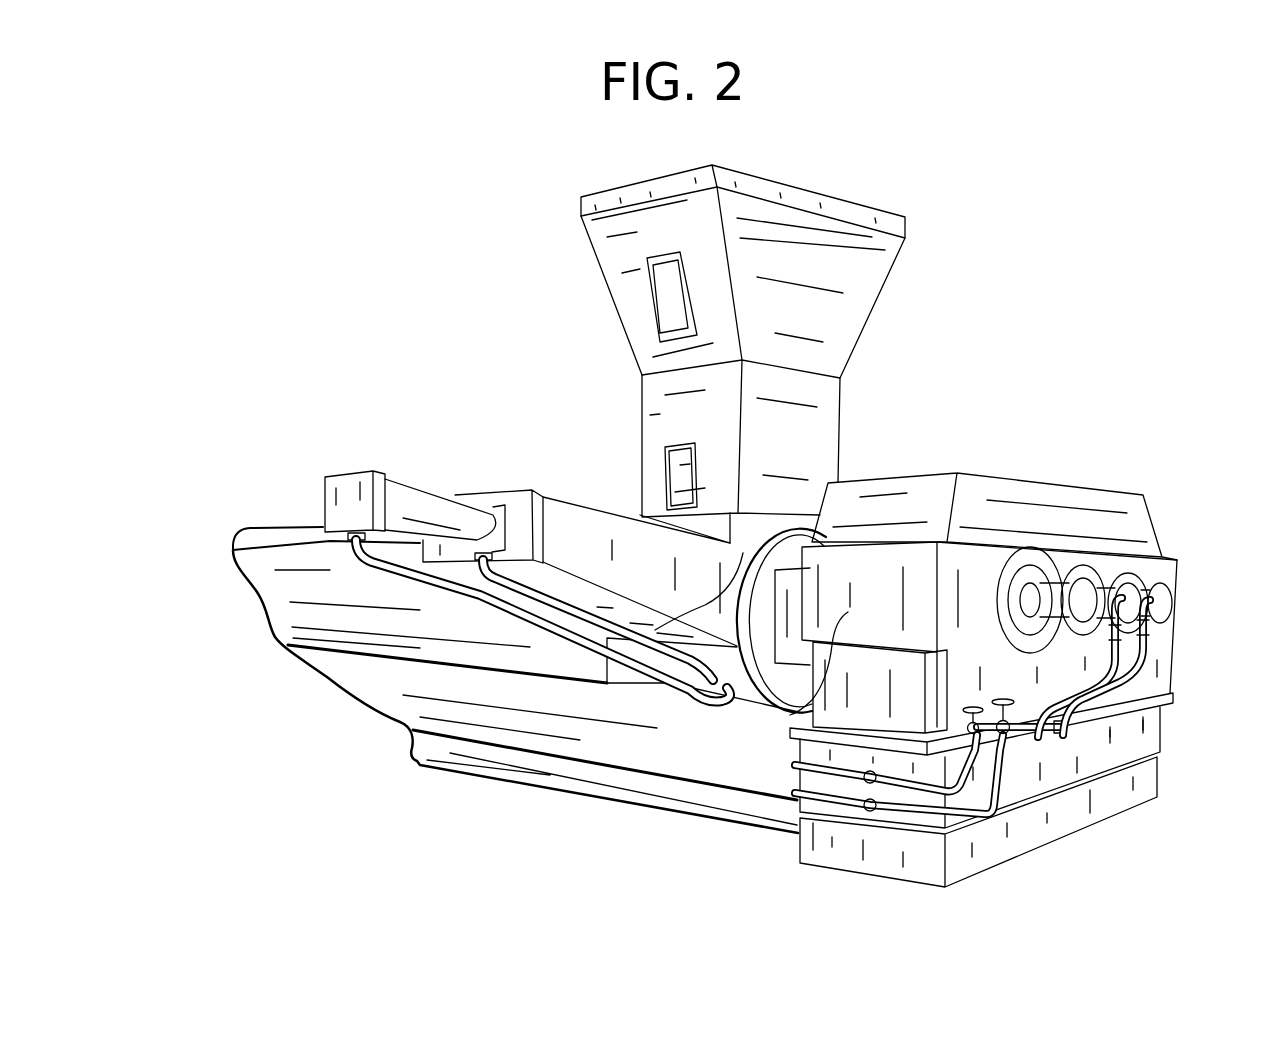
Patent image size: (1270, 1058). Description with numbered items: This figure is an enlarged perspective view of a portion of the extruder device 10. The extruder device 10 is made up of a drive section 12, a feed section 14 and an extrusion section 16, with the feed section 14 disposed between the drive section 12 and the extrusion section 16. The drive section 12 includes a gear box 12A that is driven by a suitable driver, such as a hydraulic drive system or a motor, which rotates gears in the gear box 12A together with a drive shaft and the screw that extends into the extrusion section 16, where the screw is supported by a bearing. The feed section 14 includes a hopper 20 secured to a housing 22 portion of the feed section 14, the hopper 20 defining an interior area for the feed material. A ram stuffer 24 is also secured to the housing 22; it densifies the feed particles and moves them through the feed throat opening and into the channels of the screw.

The extruder device 10 is at (1182, 172).
The drive section 12 is at (1150, 470).
The gear box 12A is at (790, 712).
The feed section 14 is at (910, 376).
The extrusion section 16 is at (218, 472).
The hopper 20 is at (935, 262).
The housing 22 is at (740, 595).
The ram stuffer 24 is at (571, 532).